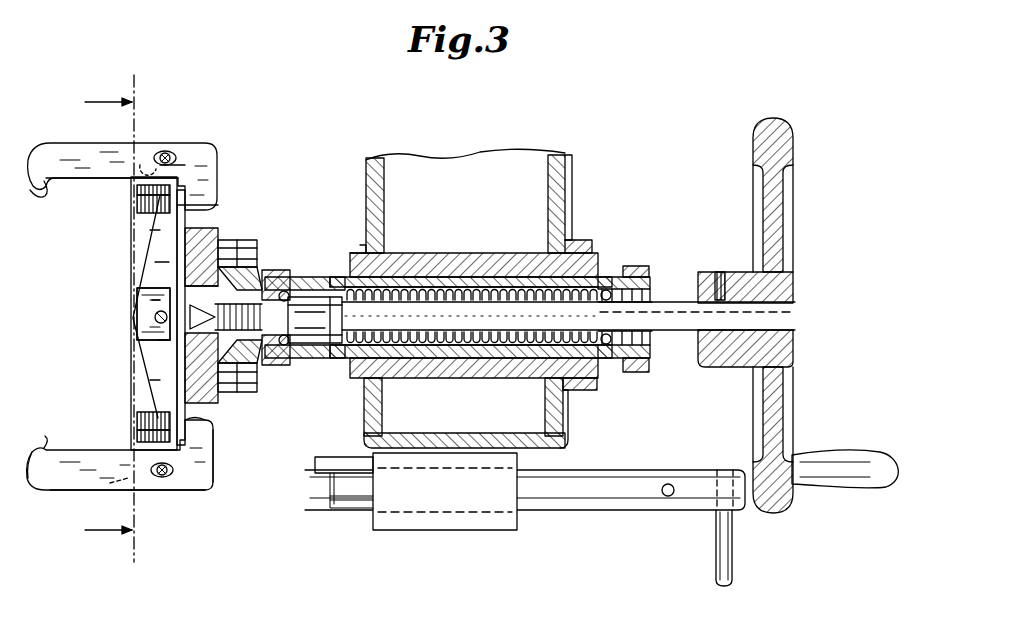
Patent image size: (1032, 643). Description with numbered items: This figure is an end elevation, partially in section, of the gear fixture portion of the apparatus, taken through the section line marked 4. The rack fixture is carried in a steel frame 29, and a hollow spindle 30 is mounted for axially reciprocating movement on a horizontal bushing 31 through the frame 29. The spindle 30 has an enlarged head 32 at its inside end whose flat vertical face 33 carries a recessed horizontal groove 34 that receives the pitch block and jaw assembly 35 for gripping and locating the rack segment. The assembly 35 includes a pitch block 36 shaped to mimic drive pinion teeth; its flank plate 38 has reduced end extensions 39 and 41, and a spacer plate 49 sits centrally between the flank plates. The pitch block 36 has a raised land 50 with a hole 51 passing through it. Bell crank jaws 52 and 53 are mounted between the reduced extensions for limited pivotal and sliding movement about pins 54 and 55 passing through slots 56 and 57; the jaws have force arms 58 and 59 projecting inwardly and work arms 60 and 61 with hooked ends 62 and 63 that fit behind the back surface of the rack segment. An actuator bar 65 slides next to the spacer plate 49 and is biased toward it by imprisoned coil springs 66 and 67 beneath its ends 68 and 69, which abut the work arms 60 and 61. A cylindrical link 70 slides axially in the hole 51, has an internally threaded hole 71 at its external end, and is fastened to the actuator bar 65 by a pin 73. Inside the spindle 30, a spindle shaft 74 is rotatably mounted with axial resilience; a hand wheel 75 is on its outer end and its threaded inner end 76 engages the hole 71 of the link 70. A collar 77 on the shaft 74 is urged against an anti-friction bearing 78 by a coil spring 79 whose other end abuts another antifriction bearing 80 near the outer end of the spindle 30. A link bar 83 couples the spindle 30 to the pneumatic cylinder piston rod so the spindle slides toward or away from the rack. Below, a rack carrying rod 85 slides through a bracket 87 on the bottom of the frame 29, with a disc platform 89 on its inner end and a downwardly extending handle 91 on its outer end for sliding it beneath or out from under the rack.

The section line 4- 4 is at (119, 318).
The steel frame 29 is at (578, 158).
The spindle 30 is at (337, 268).
The horizontal bushing 31 is at (508, 266).
The enlarged head 32 is at (248, 246).
The flat vertical face 33 is at (232, 258).
The horizontal groove 34 is at (240, 393).
The pitch block and jaw assembly 35 is at (212, 495).
The pitch block 36 is at (127, 258).
The flank plate 38 is at (208, 240).
The reduced end extension 39 is at (136, 150).
The reduced end extension 41 is at (70, 494).
The spacer plate 49 is at (195, 380).
The raised land 50 is at (242, 285).
The hole 51 is at (180, 350).
The bell crank jaw 52 is at (172, 148).
The bell crank jaw 53 is at (68, 500).
The pin 54 is at (172, 158).
The pin 55 is at (164, 480).
The slot 56 is at (175, 166).
The slot 57 is at (174, 478).
The force arm 58 is at (214, 208).
The force arm 59 is at (216, 445).
The work arm 60 is at (70, 160).
The work arm 61 is at (48, 492).
The hooked end 62 is at (50, 196).
The hooked end 63 is at (48, 445).
The actuator bar 65 is at (160, 275).
The coil spring 66 is at (140, 213).
The coil spring 67 is at (140, 418).
The end of actuator bar 68 is at (150, 186).
The end of actuator bar 69 is at (140, 441).
The cylindrical link 70 is at (172, 347).
The internally threaded hole 71 is at (286, 322).
The pin 73 is at (155, 318).
The spindle shaft 74 is at (798, 318).
The hand wheel 75 is at (788, 120).
The inner end of spindle shaft 76 is at (192, 293).
The collar 77 is at (300, 352).
The anti-friction bearing 78 is at (290, 370).
The coil spring 79 is at (437, 292).
The antifriction bearing 80 is at (612, 360).
The link bar 83 is at (620, 275).
The rack carrying rod 85 is at (645, 468).
The bracket 87 is at (505, 524).
The disc platform 89 is at (318, 470).
The handle 91 is at (736, 575).